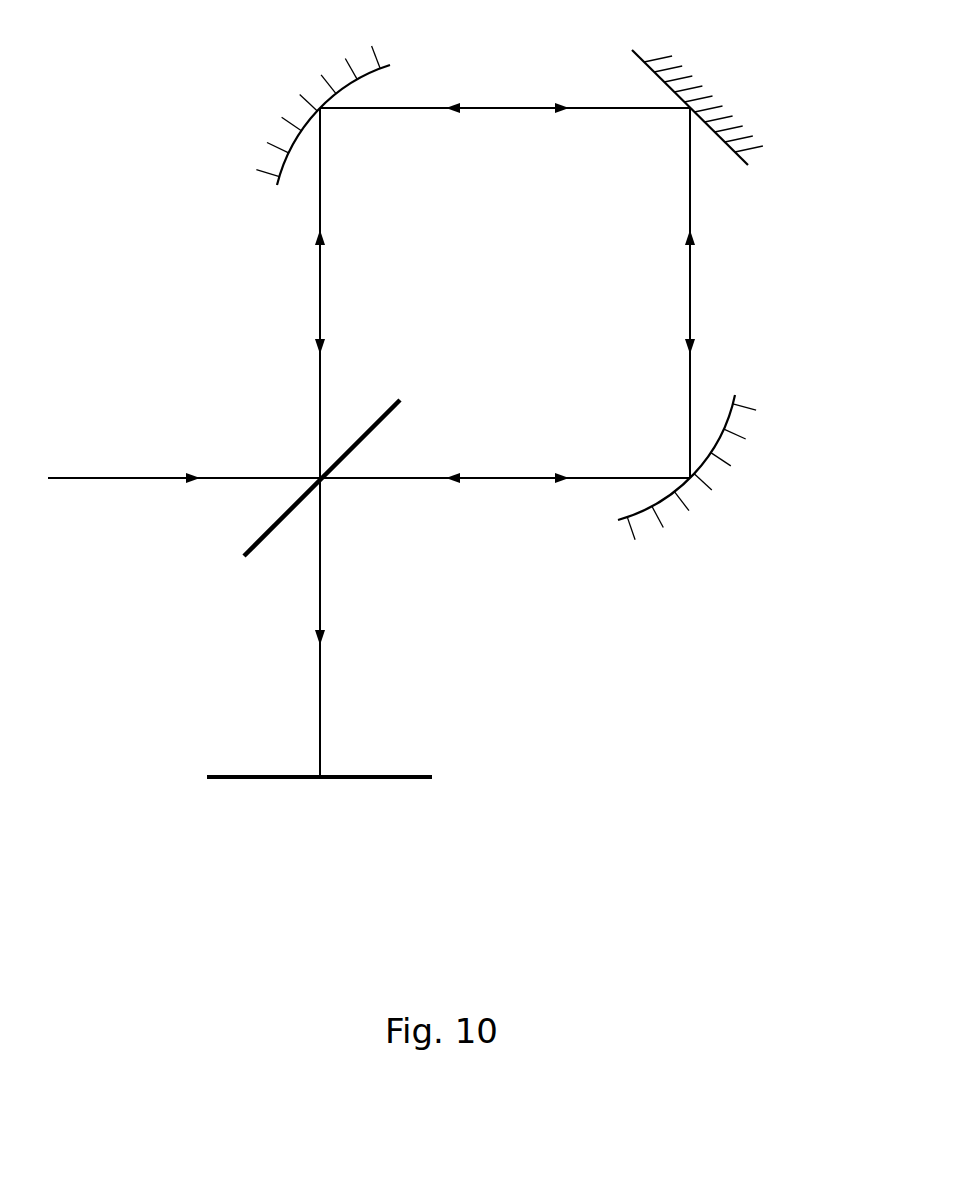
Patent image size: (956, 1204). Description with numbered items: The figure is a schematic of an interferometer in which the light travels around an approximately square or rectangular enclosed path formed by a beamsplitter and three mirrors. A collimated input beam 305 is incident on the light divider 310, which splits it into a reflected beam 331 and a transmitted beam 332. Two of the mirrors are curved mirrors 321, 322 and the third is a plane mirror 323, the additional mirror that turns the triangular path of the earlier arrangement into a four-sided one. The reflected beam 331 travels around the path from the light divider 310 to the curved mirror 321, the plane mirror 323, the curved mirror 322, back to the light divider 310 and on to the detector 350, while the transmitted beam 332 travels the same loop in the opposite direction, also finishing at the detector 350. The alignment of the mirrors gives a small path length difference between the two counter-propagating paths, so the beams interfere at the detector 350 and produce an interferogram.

The input beam 305 is at (127, 478).
The light divider 310 is at (392, 413).
The curved mirror 321 is at (320, 100).
The curved mirror 322 is at (718, 458).
The plane mirror 323 is at (688, 78).
The reflected beam 331 is at (320, 302).
The transmitted beam 332 is at (515, 480).
The detector 350 is at (410, 780).